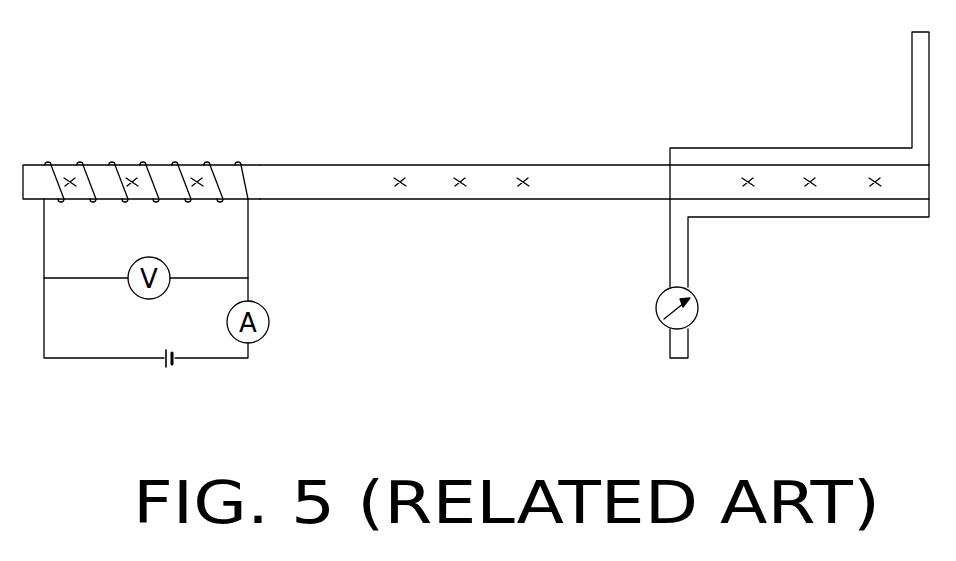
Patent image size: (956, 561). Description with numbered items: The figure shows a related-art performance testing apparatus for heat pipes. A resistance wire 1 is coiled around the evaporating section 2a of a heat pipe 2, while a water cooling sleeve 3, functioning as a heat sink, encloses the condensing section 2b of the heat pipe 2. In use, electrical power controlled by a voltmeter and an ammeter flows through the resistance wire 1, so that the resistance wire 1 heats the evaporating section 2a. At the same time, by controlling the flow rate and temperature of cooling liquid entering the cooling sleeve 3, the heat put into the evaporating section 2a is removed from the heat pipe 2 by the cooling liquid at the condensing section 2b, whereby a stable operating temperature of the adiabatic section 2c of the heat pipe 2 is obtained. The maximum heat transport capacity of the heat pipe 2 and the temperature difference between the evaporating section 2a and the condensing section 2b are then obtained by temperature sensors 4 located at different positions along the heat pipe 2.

The resistance wire 1 is at (170, 152).
The heat pipe 2 is at (476, 184).
The evaporating section 2a is at (100, 173).
The condensing section 2b is at (733, 180).
The adiabatic section 2c is at (493, 180).
The water cooling sleeve 3 is at (839, 152).
The temperature sensors 4 is at (400, 153).